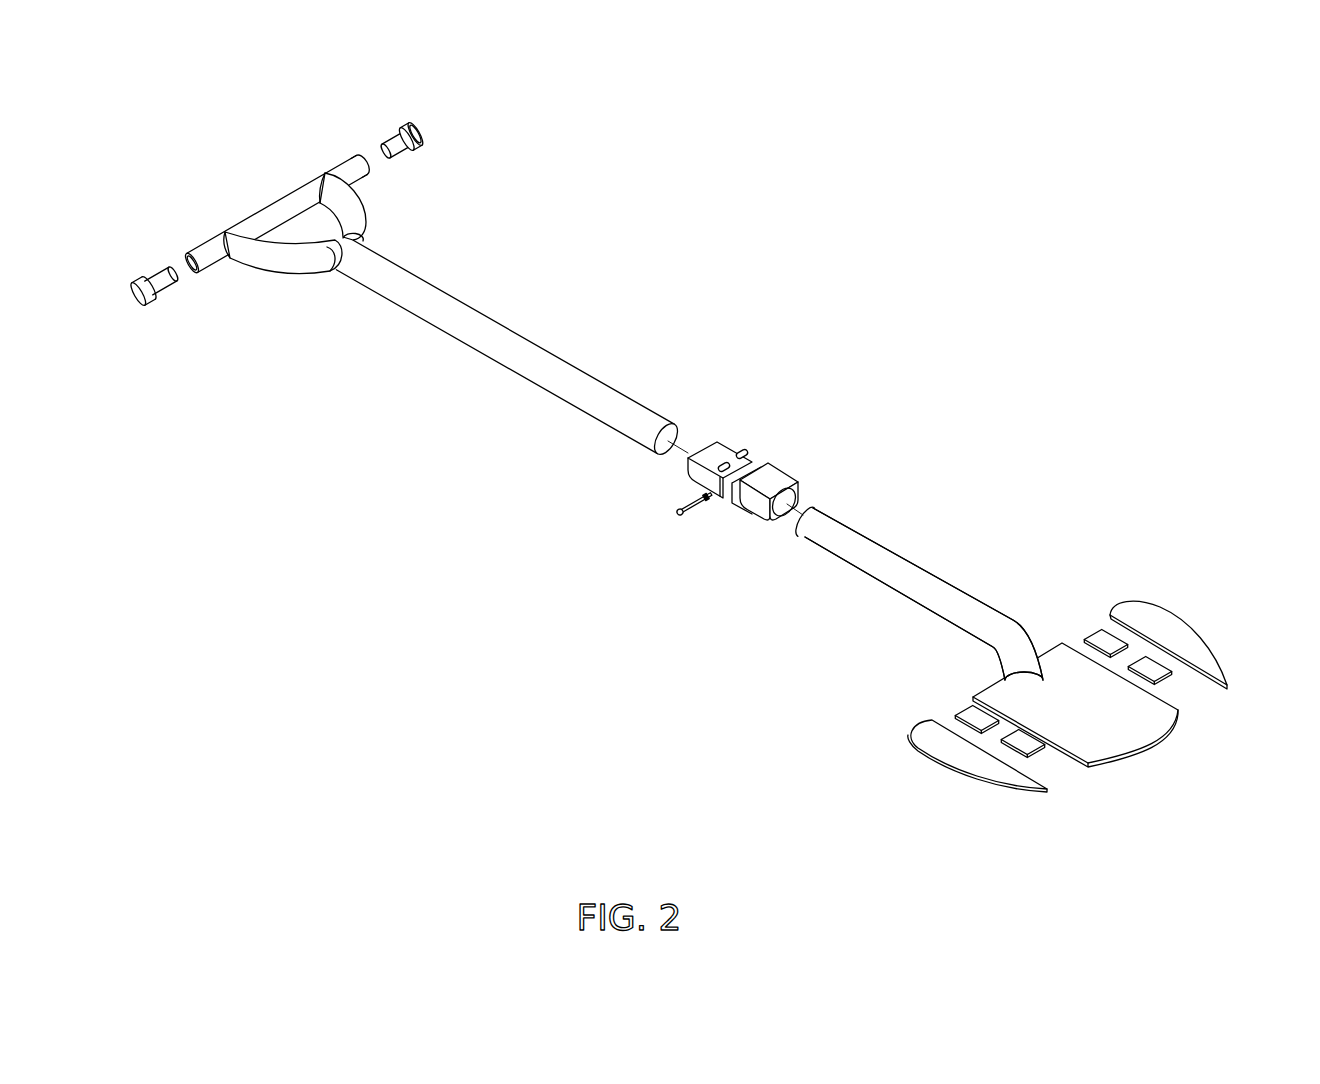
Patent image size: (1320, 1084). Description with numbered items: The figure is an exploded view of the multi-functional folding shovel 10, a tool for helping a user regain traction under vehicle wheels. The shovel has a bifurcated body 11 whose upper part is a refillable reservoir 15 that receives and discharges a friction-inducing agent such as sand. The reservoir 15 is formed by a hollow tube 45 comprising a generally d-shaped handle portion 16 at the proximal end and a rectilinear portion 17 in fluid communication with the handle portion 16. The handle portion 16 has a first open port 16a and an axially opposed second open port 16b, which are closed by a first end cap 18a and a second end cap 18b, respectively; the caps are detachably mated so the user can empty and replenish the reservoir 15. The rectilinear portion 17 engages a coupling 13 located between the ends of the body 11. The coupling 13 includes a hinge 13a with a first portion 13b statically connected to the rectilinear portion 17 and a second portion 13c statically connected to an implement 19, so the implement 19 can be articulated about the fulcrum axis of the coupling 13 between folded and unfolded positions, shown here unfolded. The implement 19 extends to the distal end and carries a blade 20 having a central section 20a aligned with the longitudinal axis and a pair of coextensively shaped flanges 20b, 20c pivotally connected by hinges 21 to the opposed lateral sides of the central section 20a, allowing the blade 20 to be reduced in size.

The multi-functional folding shovel 10 is at (677, 423).
The bifurcated body 11 is at (855, 592).
The coupling 13 is at (743, 480).
The hinge 13a is at (692, 520).
The first portion 13b is at (717, 440).
The second portion 13c is at (780, 473).
The refillable reservoir 15 is at (379, 240).
The handle portion 16 is at (304, 218).
The first open port 16a is at (184, 252).
The second open port 16b is at (360, 155).
The rectilinear portion 17 is at (450, 296).
The first end cap 18a is at (157, 298).
The second end cap 18b is at (417, 125).
The implement 19 is at (966, 559).
The blade 20 is at (1075, 696).
The central section 20a is at (1068, 721).
The flange 20b is at (918, 750).
The flange 20c is at (1160, 615).
The hinges 21 is at (1093, 635).
The hollow tube 45 is at (672, 437).